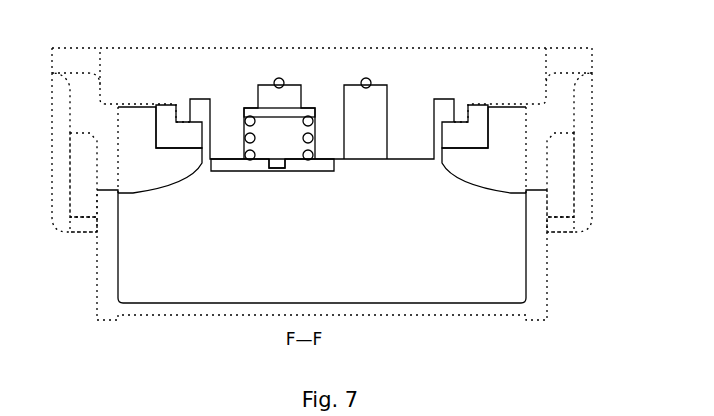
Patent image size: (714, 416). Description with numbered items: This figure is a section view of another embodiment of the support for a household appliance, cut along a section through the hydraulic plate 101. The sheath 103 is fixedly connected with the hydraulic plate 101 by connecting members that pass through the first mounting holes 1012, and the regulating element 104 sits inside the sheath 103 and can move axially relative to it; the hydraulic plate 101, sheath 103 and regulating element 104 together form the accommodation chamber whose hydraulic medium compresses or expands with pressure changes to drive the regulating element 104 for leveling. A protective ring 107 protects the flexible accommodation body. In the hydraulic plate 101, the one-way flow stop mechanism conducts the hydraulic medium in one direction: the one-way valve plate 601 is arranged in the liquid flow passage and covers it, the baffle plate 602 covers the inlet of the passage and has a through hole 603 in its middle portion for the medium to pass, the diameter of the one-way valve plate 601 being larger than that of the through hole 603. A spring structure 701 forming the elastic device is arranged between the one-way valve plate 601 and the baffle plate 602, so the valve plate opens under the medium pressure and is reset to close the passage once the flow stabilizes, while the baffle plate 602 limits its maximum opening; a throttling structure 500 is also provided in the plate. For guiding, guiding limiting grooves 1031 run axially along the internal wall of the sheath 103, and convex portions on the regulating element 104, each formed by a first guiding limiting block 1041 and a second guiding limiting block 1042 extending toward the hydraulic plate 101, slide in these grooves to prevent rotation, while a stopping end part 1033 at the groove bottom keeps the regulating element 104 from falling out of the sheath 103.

The hydraulic plate 101 is at (490, 48).
The first mounting hole 1012 is at (190, 99).
The throttling structure 500 is at (279, 78).
The one-way valve plate 601 is at (283, 110).
The baffle plate 602 is at (298, 172).
The through hole 603 is at (275, 172).
The spring structure 701 is at (250, 140).
The protective ring 107 is at (132, 165).
The sheath 103 is at (50, 216).
The guiding limiting groove 1031 is at (562, 95).
The stopping end part 1033 is at (77, 240).
The first guiding limiting block 1041 is at (558, 210).
The second guiding limiting block 1042 is at (560, 158).
The regulating element 104 is at (100, 312).